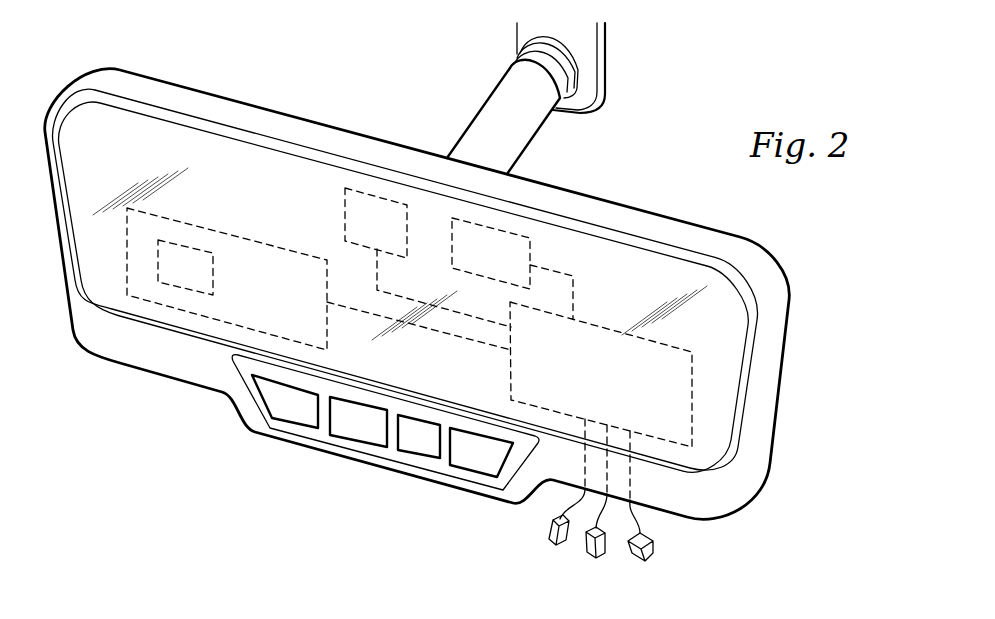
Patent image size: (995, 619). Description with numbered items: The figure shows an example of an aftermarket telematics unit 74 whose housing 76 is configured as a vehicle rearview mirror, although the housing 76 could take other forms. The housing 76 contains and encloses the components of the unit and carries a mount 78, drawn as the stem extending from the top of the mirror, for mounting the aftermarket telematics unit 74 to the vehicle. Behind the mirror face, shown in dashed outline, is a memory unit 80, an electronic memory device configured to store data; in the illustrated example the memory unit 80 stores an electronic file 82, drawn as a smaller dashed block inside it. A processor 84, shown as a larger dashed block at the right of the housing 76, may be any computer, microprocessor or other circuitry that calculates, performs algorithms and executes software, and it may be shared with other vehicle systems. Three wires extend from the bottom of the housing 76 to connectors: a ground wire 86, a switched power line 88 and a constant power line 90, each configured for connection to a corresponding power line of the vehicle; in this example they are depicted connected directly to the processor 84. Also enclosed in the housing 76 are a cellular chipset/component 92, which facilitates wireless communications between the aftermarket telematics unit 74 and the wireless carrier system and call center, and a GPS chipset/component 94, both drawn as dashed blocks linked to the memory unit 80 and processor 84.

The aftermarket telematics unit 74 is at (634, 160).
The housing 76 is at (667, 232).
The mount 78 is at (506, 73).
The memory unit 80 is at (229, 237).
The electronic file 82 is at (214, 272).
The processor 84 is at (697, 386).
The ground wire 86 is at (549, 524).
The switched power line 88 is at (590, 552).
The constant power line 90 is at (654, 548).
The cellular chipset/component 92 is at (533, 250).
The GPS chipset/component 94 is at (343, 216).